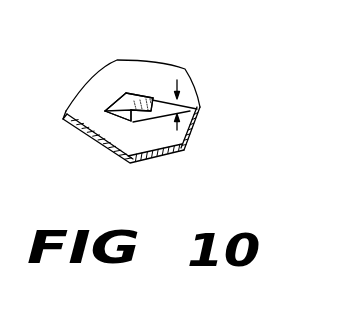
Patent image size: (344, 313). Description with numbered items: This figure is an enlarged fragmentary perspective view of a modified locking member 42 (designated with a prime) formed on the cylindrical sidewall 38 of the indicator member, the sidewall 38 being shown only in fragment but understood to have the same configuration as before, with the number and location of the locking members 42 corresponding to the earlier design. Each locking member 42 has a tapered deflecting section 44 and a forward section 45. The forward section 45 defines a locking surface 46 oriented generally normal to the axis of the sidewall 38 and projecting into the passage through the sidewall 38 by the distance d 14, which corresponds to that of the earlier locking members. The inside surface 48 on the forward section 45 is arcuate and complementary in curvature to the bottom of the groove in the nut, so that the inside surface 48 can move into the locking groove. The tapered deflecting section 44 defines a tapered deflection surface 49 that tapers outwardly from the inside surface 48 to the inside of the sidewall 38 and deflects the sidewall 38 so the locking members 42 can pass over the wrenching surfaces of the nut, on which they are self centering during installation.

The cylindrical sidewall 38 is at (152, 157).
The locking member 42 is at (142, 91).
The tapered deflecting section 44 is at (133, 91).
The forward section 45 is at (185, 69).
The locking surface 46 is at (139, 127).
The inside surface 48 is at (155, 90).
The tapered deflection surface 49 is at (121, 99).
The distance d14 14 is at (197, 108).